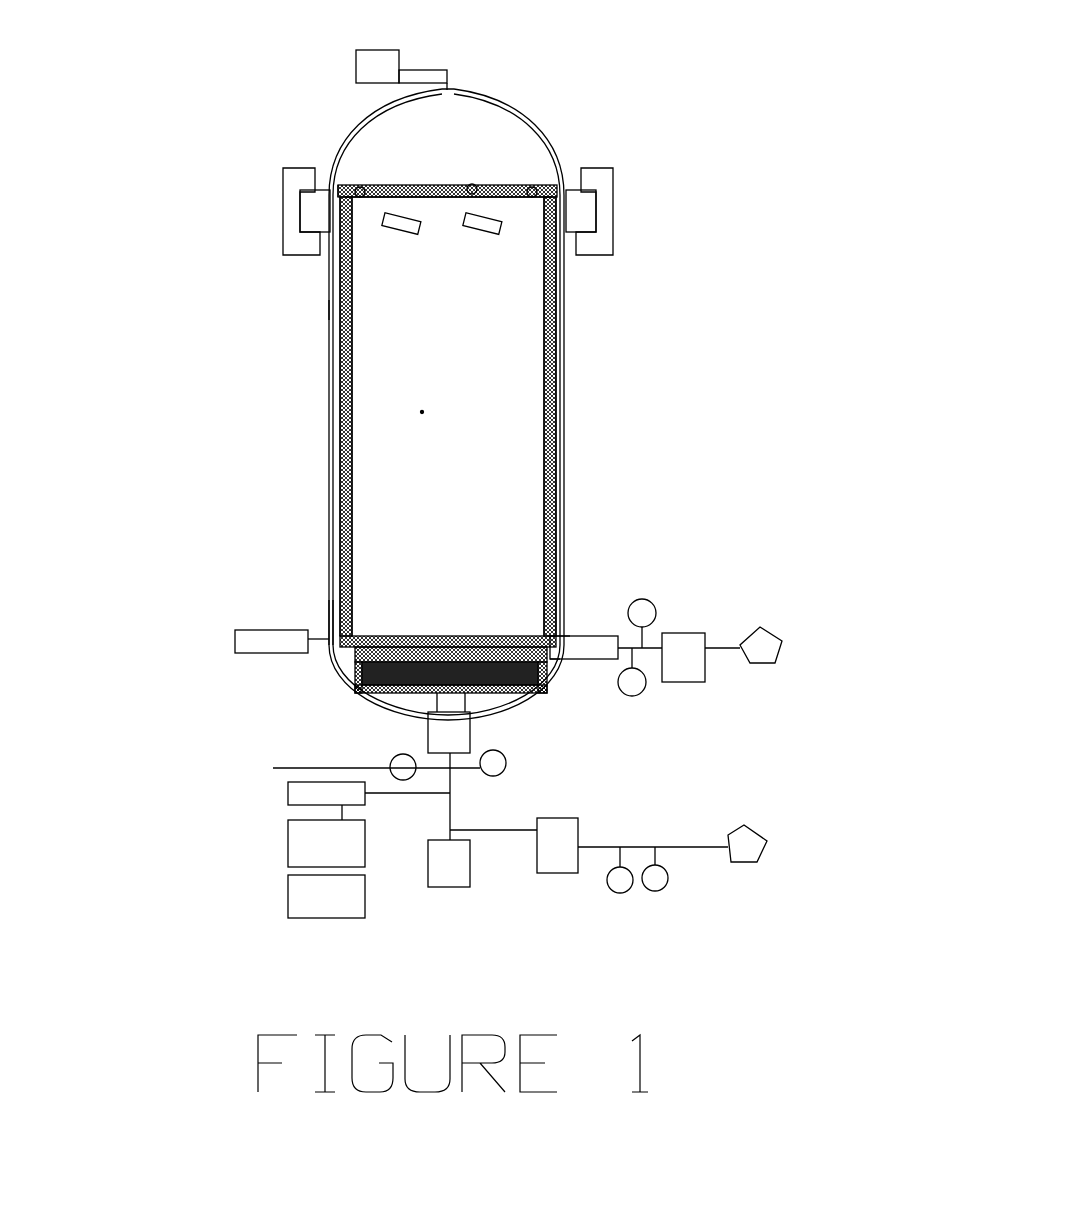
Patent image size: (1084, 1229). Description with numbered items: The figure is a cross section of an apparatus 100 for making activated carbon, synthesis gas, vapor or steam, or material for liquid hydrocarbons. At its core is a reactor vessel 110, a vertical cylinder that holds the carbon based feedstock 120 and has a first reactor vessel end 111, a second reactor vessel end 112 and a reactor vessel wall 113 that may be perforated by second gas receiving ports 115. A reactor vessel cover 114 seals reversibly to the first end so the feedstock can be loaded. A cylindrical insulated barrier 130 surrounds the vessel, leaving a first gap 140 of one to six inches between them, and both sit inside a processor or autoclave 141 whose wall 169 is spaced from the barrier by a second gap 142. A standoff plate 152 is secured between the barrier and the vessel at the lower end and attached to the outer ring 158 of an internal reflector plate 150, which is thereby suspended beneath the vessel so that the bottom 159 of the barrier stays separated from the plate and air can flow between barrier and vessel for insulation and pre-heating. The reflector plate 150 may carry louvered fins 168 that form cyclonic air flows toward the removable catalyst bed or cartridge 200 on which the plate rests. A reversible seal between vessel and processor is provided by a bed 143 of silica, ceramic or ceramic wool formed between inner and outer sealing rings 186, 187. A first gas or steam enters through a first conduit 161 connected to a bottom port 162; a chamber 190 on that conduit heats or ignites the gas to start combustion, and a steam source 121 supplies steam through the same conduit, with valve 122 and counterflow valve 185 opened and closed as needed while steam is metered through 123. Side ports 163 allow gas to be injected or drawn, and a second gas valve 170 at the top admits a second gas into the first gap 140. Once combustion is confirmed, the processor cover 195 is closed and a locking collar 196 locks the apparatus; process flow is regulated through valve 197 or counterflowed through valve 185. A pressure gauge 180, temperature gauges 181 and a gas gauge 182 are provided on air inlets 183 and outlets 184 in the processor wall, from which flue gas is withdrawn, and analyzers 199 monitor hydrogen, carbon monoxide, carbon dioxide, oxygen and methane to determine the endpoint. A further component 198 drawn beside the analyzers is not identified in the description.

The apparatus 100 is at (425, 36).
The reactor vessel 110 is at (346, 438).
The first reactor vessel end 111 is at (360, 184).
The second reactor vessel end 112 is at (400, 630).
The reactor vessel wall 113 is at (343, 520).
The reactor vessel cover 114 is at (433, 183).
The second gas receiving ports 115 is at (390, 225).
The carbon based feedstock 120 is at (421, 412).
The steam source 121 is at (327, 897).
The valve 122 is at (270, 639).
The steam metering element 123 is at (330, 640).
The insulated barrier 130 is at (336, 320).
The first gap 140 is at (341, 467).
The processor 141 is at (330, 493).
The second gap 142 is at (332, 380).
The bed 143 is at (334, 684).
The internal reflector plate 150 is at (358, 665).
The standoff plate 152 is at (326, 632).
The outer ring 158 is at (330, 656).
The bottom of the barrier 159 is at (542, 654).
The first conduit 161 is at (313, 793).
The port 162 is at (441, 733).
The side ports 163 is at (594, 638).
The louvered fins 168 is at (534, 690).
The processor wall 169 is at (331, 348).
The second gas valve 170 is at (438, 89).
The pressure gauge 180 is at (508, 764).
The temperature gauges 181 is at (273, 768).
The gas gauge 182 is at (651, 689).
The air inlets 183 is at (460, 862).
The outlets 184 is at (506, 839).
The counterflow valve 185 is at (683, 648).
The inner sealing ring 186 is at (549, 645).
The outer sealing ring 187 is at (569, 635).
The chamber 190 is at (318, 845).
The processor cover 195 is at (548, 108).
The locking collar 196 is at (602, 172).
The valve 197 is at (356, 68).
The connector 198 is at (728, 642).
The analyzers 199 is at (775, 647).
The catalyst cartridge 200 is at (371, 682).